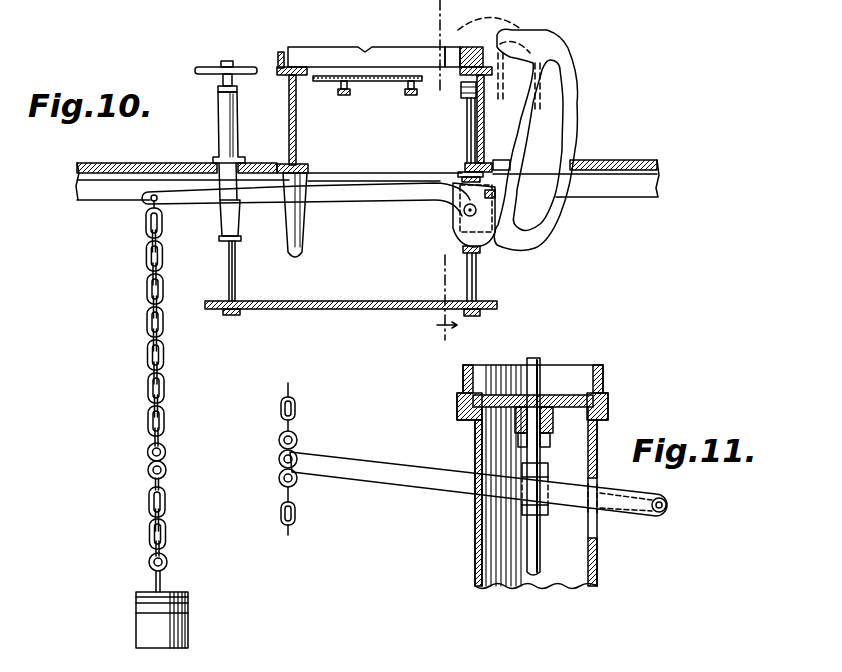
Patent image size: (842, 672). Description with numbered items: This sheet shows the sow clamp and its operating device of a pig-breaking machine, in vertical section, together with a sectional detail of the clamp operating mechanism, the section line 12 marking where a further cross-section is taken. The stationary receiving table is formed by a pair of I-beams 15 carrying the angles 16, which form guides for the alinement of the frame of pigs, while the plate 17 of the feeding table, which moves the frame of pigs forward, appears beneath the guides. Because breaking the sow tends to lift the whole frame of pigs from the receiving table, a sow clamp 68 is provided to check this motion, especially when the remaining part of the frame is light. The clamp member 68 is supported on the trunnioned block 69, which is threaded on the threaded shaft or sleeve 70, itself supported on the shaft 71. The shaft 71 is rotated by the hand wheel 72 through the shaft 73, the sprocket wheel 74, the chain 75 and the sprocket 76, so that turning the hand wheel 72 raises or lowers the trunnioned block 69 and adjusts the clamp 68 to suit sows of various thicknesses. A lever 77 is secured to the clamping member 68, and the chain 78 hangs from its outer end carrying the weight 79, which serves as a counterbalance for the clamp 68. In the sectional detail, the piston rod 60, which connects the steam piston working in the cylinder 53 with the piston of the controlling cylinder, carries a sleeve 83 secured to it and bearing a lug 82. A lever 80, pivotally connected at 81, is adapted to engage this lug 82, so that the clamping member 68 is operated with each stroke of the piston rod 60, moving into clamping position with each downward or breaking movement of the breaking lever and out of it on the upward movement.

In FIG. 10, the section line 12 is at (441, 177).
In FIG. 10, the I-beams 15 is at (289, 121).
In FIG. 10, the angles 16 is at (279, 53).
In FIG. 10, the plate 17 is at (378, 82).
In FIG. 11, the cylinder 53 is at (566, 377).
In FIG. 11, the piston rod 60 is at (538, 561).
In FIG. 10, the sow clamp 68 is at (565, 72).
In FIG. 10, the trunnioned block 69 is at (455, 234).
In FIG. 10, the threaded shaft or sleeve 70 is at (462, 249).
In FIG. 10, the shaft 71 is at (466, 125).
In FIG. 10, the hand wheel 72 is at (205, 67).
In FIG. 10, the shaft 73 is at (229, 268).
In FIG. 10, the sprocket wheel 74 is at (220, 311).
In FIG. 10, the chain 75 is at (338, 310).
In FIG. 10, the sprocket 76 is at (497, 308).
In FIG. 10, the lever 77 is at (347, 196).
In FIG. 10, the chain 78 is at (147, 293).
In FIG. 11, the chain 78 is at (280, 417).
In FIG. 10, the weight 79 is at (142, 631).
In FIG. 10, the lever 80 is at (156, 462).
In FIG. 11, the lever 80 is at (372, 467).
In FIG. 11, the pivot 81 is at (668, 513).
In FIG. 11, the lug 82 is at (543, 515).
In FIG. 11, the sleeve 83 is at (547, 471).